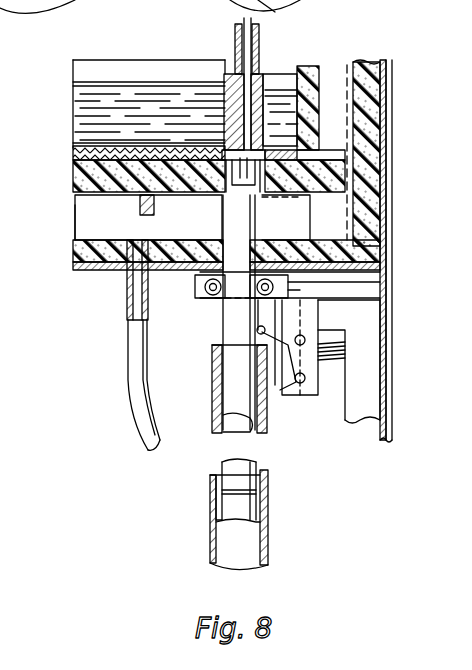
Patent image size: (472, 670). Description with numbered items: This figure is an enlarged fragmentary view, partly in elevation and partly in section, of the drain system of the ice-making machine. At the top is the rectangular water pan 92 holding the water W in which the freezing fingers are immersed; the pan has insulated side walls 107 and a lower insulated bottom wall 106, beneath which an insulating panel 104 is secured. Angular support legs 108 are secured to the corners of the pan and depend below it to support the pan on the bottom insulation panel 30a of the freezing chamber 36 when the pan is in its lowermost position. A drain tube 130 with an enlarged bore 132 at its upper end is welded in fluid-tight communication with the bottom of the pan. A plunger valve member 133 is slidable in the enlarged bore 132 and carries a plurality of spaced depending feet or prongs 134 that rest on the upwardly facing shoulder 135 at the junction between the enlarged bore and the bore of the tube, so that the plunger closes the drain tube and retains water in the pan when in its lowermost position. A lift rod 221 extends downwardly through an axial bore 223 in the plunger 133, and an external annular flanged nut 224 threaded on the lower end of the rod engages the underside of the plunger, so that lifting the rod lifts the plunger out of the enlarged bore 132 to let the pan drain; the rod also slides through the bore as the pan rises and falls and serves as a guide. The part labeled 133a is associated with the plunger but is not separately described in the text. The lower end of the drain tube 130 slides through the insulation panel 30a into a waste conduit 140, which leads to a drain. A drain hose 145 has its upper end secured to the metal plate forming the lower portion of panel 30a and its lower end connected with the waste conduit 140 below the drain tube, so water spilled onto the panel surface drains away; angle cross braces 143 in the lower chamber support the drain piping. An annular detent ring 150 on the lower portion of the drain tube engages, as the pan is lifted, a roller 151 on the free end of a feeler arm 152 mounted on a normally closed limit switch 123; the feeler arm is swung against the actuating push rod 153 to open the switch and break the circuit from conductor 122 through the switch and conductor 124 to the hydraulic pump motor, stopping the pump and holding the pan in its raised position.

The water pan 92 is at (72, 76).
The water W is at (80, 104).
The axial bore 223 is at (222, 70).
The external annular flanged nut 224 is at (220, 142).
The lower insulated bottom wall 106 is at (73, 150).
The insulating panel 104 is at (73, 172).
The angle cross braces 143 is at (142, 212).
The freezing chamber 36 is at (94, 208).
The bottom panel of insulation 30a is at (73, 258).
The lift rod 221 is at (252, 22).
The sleeve 133a is at (258, 40).
The plunger valve member 133 is at (256, 76).
The enlarged bore 132 is at (268, 112).
The side walls 107 is at (312, 66).
The angular support legs 108 is at (372, 208).
The depending feet or prongs 134 is at (372, 155).
The upwardly facing shoulder 135 is at (370, 178).
The drain tube 130 is at (223, 328).
The roller 151 is at (272, 342).
The feeler arm 152 is at (265, 330).
The limit switch 123 is at (290, 395).
The actuating button or push rod 153 is at (330, 370).
The conductor 124 is at (333, 345).
The conductor 122 is at (336, 350).
The drain hose 145 is at (128, 350).
The waste conduit 140 is at (268, 528).
The annular projecting ring or detent member 150 is at (257, 492).